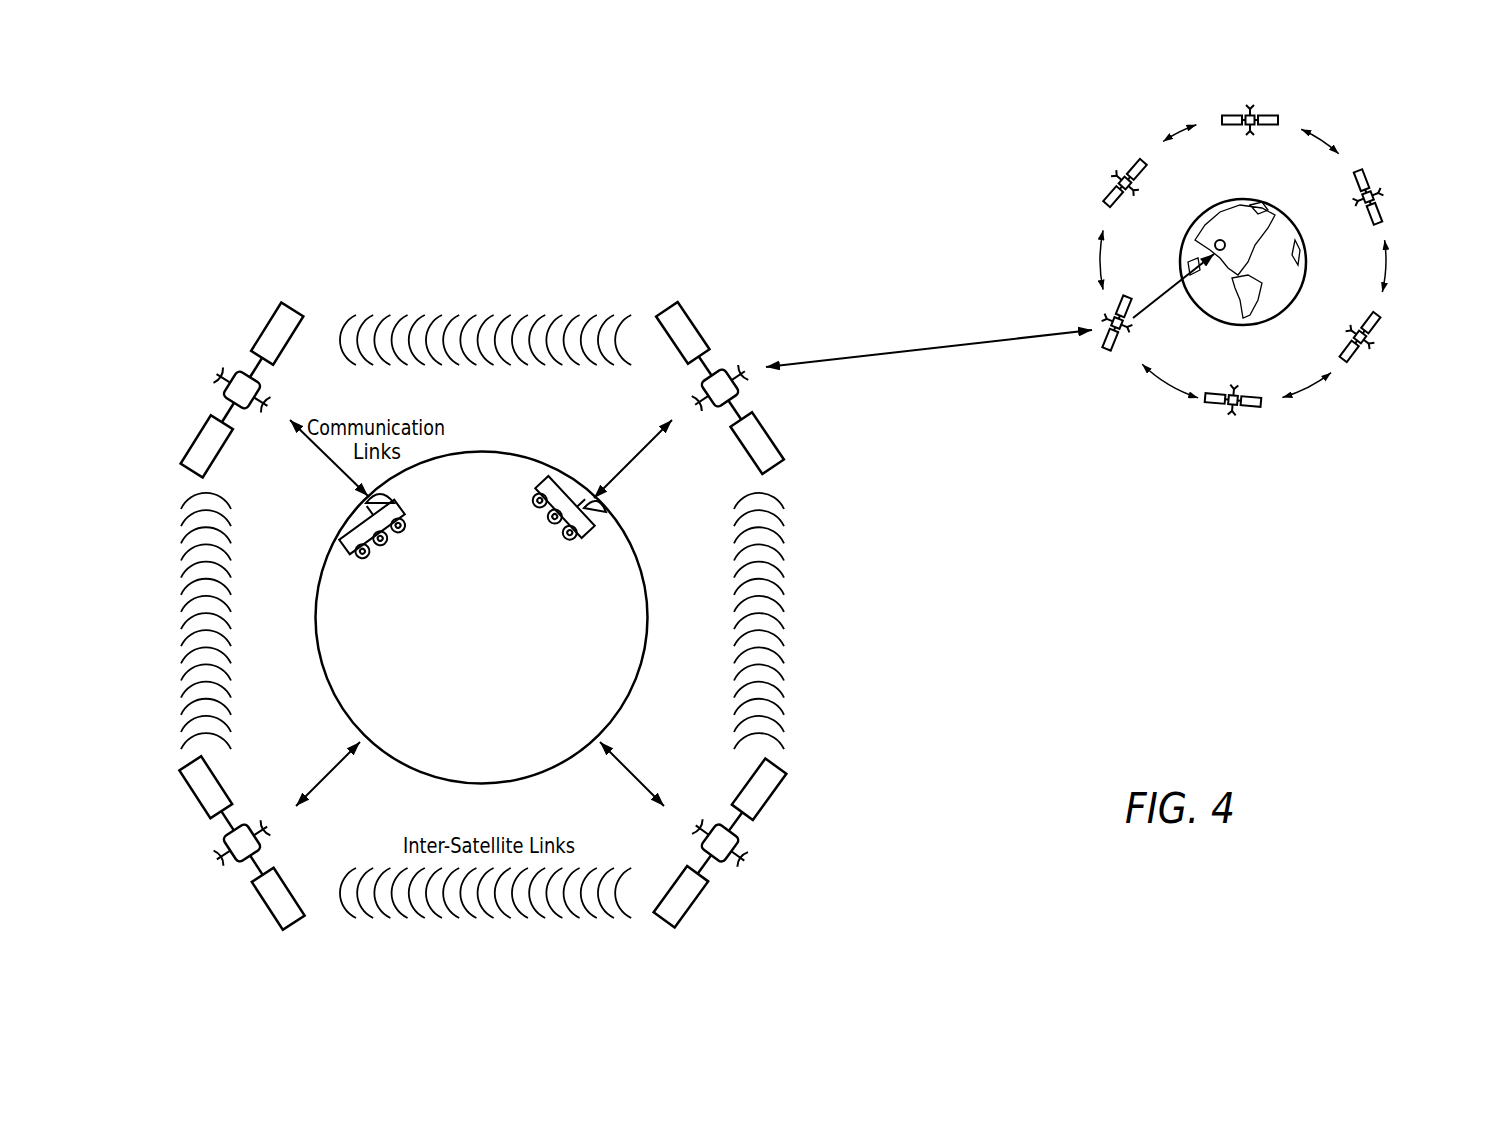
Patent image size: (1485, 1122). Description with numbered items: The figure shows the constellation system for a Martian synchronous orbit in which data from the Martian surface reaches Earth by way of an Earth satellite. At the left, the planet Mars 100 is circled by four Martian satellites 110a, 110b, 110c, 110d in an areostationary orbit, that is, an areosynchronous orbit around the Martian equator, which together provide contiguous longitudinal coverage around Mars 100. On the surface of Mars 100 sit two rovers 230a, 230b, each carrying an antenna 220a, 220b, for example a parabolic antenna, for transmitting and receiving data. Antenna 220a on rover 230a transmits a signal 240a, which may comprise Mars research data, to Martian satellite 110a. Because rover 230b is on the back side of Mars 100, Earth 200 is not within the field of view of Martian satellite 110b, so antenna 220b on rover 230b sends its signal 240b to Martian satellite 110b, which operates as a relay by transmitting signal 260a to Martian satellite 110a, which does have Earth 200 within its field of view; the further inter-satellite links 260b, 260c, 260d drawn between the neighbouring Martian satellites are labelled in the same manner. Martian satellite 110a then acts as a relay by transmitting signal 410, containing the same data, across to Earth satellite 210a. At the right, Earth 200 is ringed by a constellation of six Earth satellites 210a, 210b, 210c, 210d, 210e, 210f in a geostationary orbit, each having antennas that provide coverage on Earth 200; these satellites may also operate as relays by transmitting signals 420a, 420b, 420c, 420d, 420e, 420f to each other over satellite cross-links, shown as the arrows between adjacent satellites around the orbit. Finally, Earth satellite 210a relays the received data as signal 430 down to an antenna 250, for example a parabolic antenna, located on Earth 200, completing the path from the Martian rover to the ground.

The Mars 100 is at (482, 618).
The Martian satellite 110a is at (722, 373).
The Martian satellite 110b is at (239, 373).
The Martian satellite 110c is at (230, 843).
The Martian satellite 110d is at (738, 843).
The Earth 200 is at (1285, 220).
The Earth satellite 210a is at (1110, 330).
The Earth satellite 210b is at (1120, 180).
The Earth satellite 210c is at (1256, 115).
The Earth satellite 210d is at (1378, 195).
The Earth satellite 210e is at (1375, 338).
The Earth satellite 210f is at (1232, 410).
The antenna 220a is at (594, 514).
The antenna 220b is at (380, 498).
The rover 230a is at (545, 481).
The rover 230b is at (360, 548).
The signal 240a is at (636, 452).
The signal 240b is at (335, 465).
The antenna 250 is at (1217, 241).
The signal 260a is at (470, 318).
The signal waves 260b is at (183, 603).
The signal waves 260c is at (478, 918).
The signal waves 260d is at (781, 602).
The signal 410 is at (912, 348).
The signal 420a is at (1150, 385).
The signal 420b is at (1100, 258).
The signal 420c is at (1180, 128).
The signal 420d is at (1335, 132).
The signal 420e is at (1390, 262).
The signal 420f is at (1322, 400).
The signal 430 is at (1180, 288).